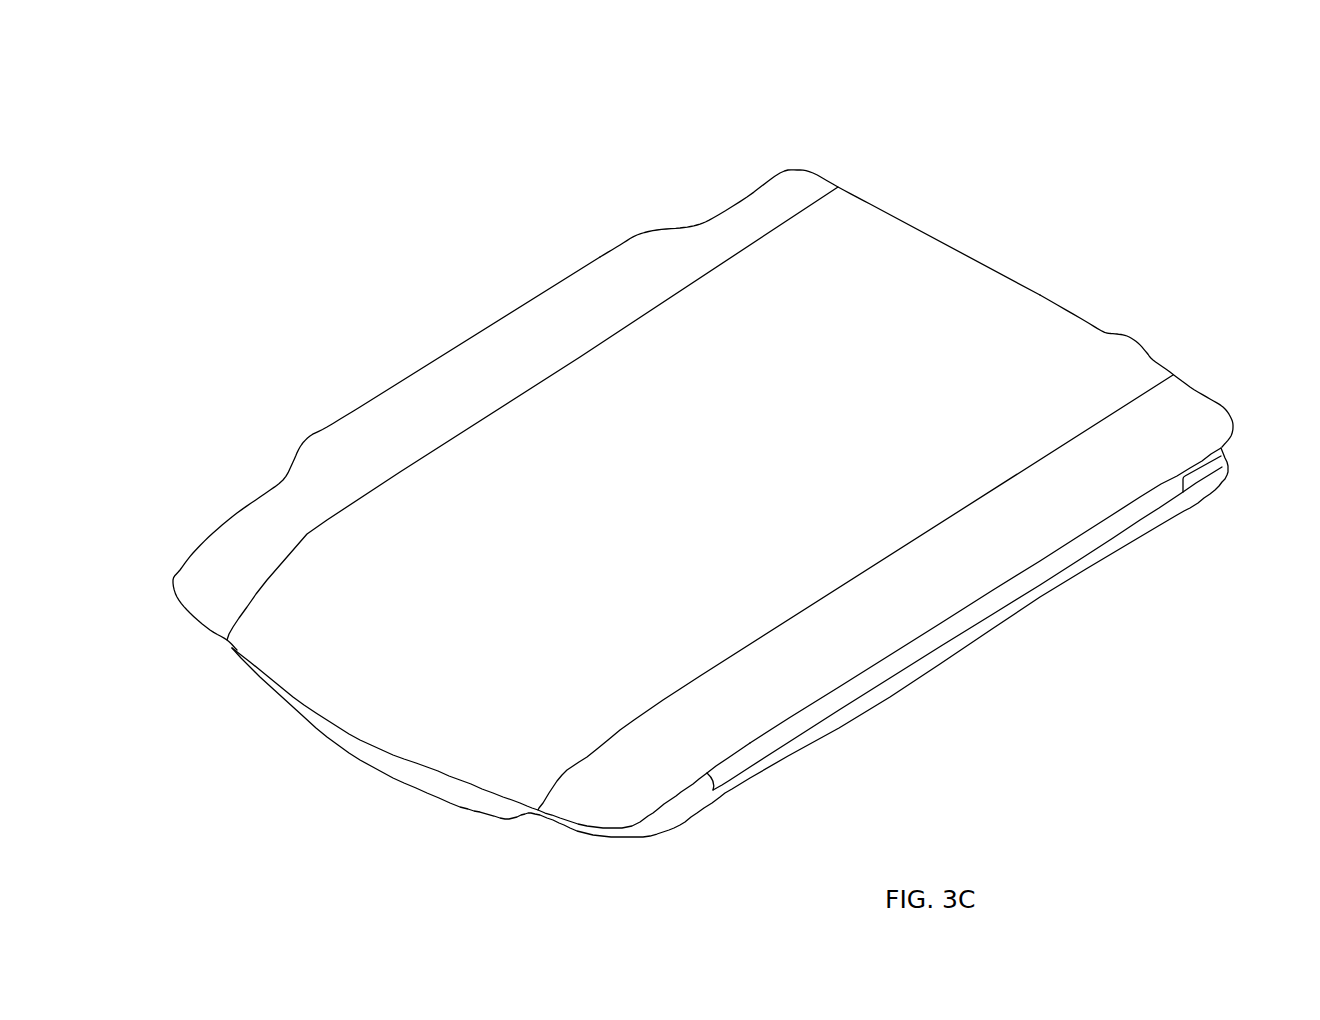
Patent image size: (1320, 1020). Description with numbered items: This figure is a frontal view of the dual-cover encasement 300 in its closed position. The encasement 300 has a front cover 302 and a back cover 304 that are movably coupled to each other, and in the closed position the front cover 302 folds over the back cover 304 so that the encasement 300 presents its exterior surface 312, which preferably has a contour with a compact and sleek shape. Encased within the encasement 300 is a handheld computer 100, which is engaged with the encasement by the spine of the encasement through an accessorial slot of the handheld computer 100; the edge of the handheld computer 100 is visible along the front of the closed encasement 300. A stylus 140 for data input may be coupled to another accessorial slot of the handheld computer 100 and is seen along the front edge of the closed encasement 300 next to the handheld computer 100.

The dual-cover encasement 300 is at (861, 134).
The front cover 302 is at (1013, 280).
The back cover 304 is at (598, 833).
The exterior surface 312 is at (887, 270).
The handheld computer 100 is at (1224, 462).
The stylus 140 is at (918, 653).